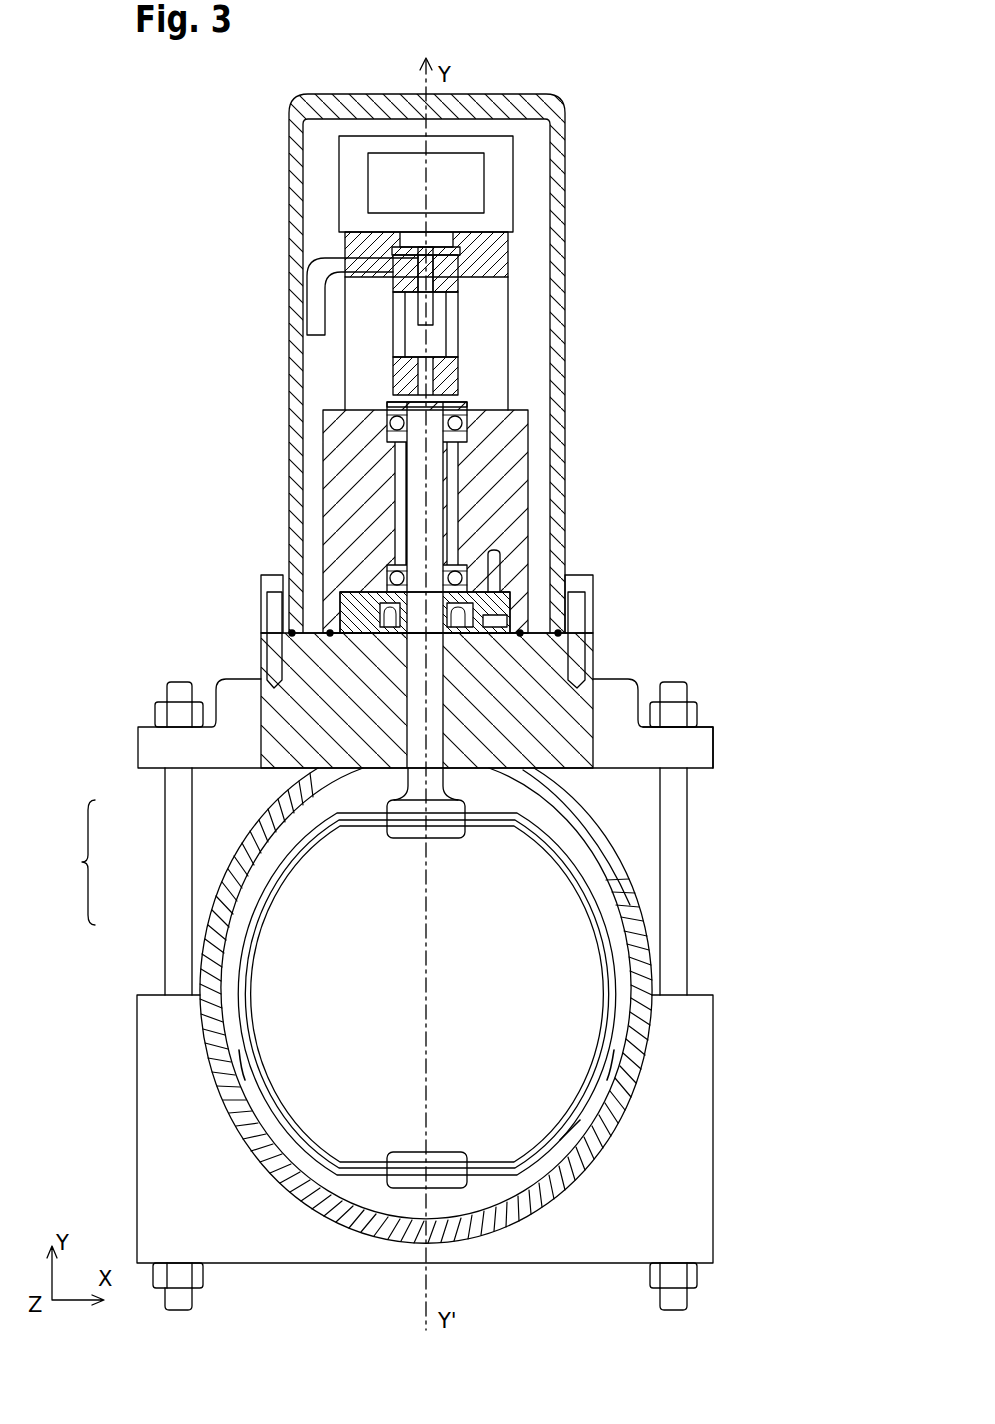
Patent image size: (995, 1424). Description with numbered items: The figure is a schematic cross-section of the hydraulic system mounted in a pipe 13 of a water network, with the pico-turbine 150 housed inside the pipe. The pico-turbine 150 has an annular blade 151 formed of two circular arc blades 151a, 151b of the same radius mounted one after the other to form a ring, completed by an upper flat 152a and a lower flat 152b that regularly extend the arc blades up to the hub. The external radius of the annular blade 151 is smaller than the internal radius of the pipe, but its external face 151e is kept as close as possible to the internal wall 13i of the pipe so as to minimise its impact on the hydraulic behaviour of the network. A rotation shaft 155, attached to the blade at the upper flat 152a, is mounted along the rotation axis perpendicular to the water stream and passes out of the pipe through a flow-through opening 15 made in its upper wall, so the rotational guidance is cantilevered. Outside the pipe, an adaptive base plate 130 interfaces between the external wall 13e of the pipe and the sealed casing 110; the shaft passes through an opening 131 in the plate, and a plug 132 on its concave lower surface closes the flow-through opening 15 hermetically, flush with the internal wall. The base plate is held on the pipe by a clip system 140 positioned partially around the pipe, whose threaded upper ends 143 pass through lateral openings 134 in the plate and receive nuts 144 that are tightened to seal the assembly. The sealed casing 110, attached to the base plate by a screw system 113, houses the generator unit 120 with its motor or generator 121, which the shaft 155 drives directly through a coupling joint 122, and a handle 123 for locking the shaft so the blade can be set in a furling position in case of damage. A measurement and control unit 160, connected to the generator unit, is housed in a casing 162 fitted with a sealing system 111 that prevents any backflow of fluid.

The sealed casing 110 is at (560, 280).
The sealing system 111 is at (340, 610).
The screw system 113 is at (592, 578).
The generator unit 120 is at (540, 240).
The motor or generator 121 is at (338, 172).
The coupling joint 122 is at (392, 378).
The handle 123 is at (306, 302).
The adaptive base plate 130 is at (252, 736).
The opening 131 is at (275, 705).
The plug 132 is at (386, 776).
The lateral opening 134 is at (706, 718).
The clip system 140 is at (190, 1200).
The upper ends 143 is at (674, 684).
The nut 144 is at (694, 710).
The pico-turbine 150 is at (70, 862).
The annular blade 151 is at (240, 990).
The circular arc blade 151a is at (243, 1062).
The circular arc blade 151b is at (621, 1062).
The external face of the annular blade 151e is at (572, 1130).
The upper flat 152a is at (443, 832).
The lower flat 152b is at (412, 1164).
The rotation shaft 155 is at (400, 565).
The measurement and control unit 160 is at (632, 592).
The casing 162 is at (530, 480).
The pipe 13 is at (630, 872).
The external wall of the pipe 13e is at (606, 830).
The internal wall of the pipe 13i is at (626, 942).
The flow-through opening 15 is at (600, 772).